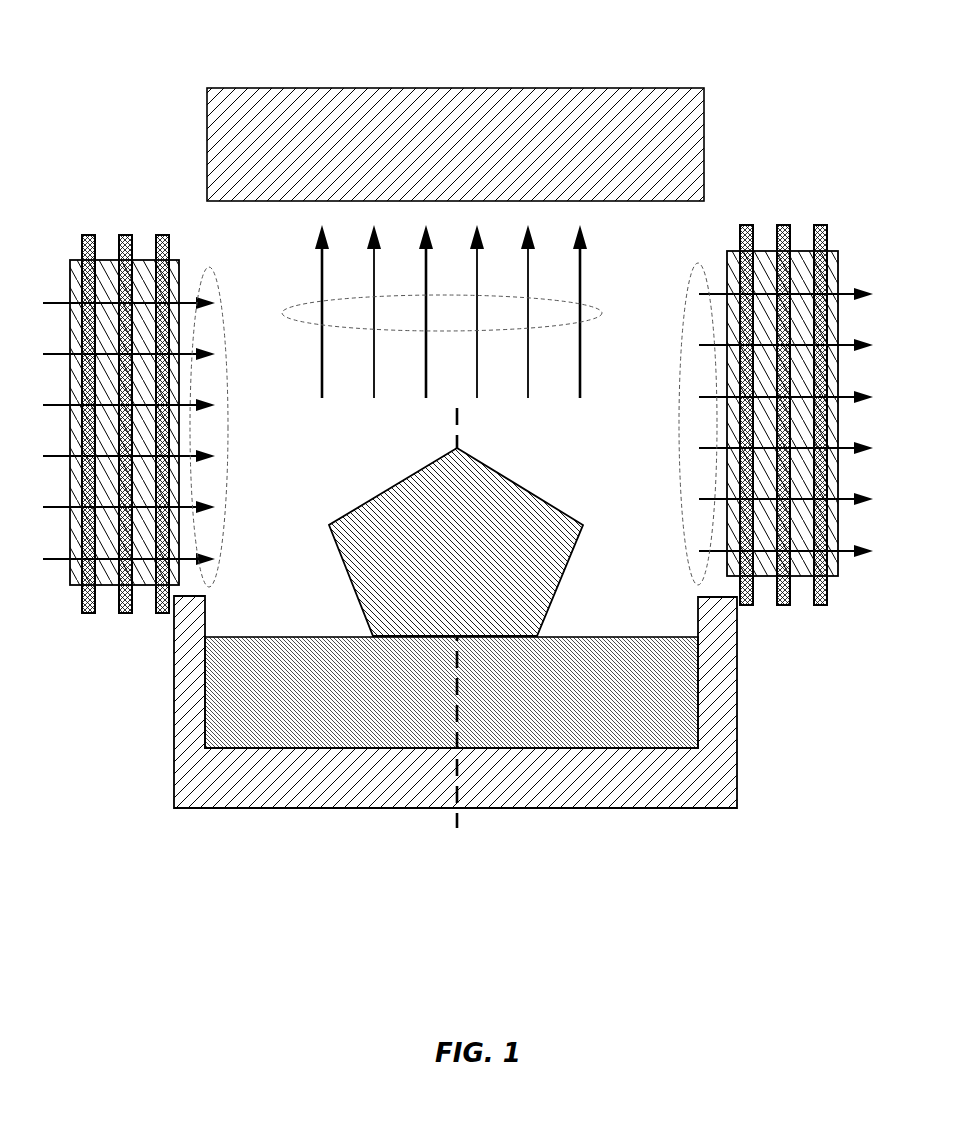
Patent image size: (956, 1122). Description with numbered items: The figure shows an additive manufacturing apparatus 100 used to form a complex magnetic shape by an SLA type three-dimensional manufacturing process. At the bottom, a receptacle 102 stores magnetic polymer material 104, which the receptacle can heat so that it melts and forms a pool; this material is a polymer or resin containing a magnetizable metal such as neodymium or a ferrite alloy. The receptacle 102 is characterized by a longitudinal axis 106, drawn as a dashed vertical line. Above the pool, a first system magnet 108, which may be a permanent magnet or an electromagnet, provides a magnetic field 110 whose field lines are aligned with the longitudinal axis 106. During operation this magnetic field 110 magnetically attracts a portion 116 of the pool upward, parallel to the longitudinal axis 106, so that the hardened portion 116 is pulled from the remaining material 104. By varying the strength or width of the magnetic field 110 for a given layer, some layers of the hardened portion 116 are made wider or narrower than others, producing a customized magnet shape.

The additive manufacturing apparatus 100 is at (280, 48).
The receptacle 102 is at (709, 788).
The magnetic polymer material 104 is at (677, 729).
The longitudinal axis 106 is at (456, 830).
The first system magnet 108 is at (461, 144).
The magnetic field 110 is at (601, 313).
The hardened portion 116 is at (524, 546).